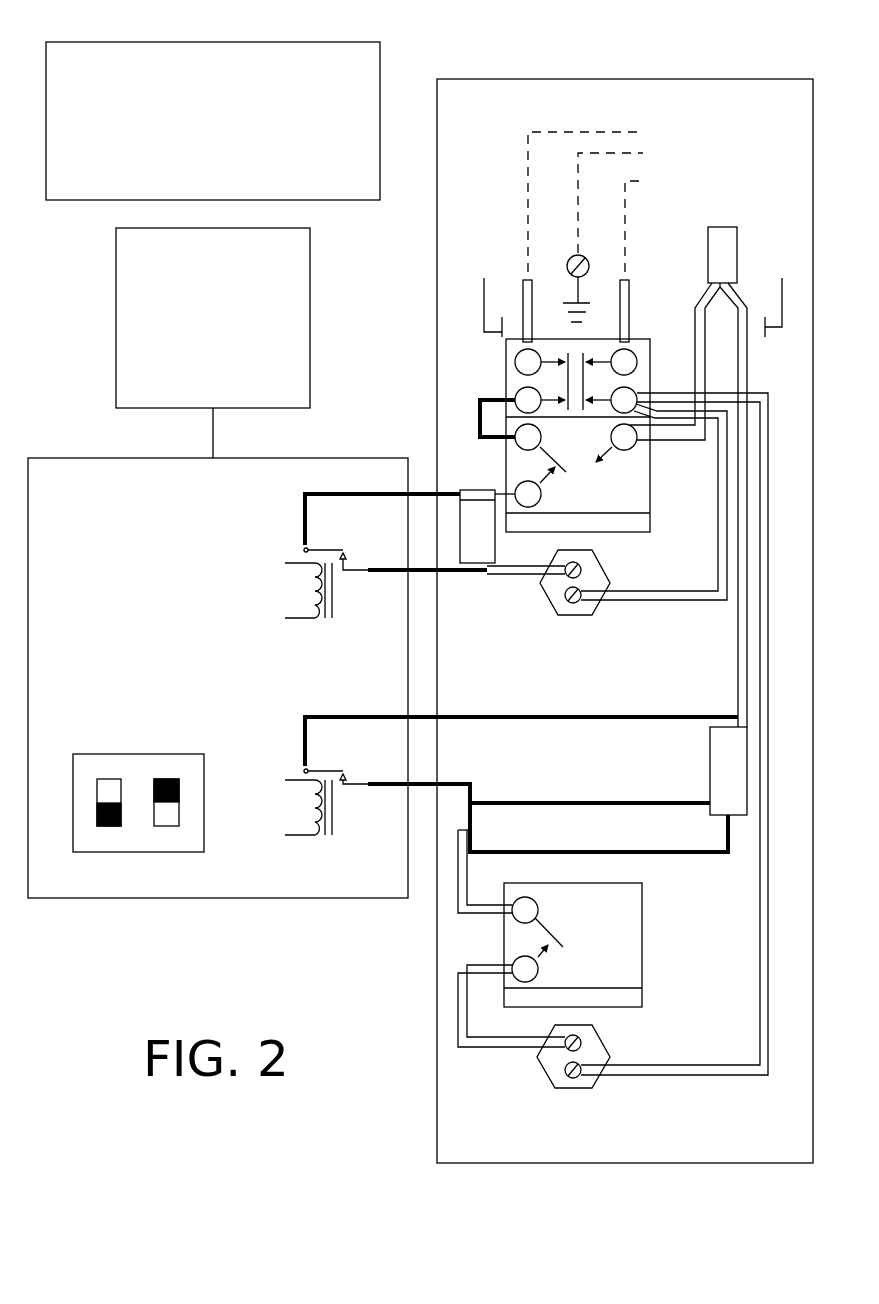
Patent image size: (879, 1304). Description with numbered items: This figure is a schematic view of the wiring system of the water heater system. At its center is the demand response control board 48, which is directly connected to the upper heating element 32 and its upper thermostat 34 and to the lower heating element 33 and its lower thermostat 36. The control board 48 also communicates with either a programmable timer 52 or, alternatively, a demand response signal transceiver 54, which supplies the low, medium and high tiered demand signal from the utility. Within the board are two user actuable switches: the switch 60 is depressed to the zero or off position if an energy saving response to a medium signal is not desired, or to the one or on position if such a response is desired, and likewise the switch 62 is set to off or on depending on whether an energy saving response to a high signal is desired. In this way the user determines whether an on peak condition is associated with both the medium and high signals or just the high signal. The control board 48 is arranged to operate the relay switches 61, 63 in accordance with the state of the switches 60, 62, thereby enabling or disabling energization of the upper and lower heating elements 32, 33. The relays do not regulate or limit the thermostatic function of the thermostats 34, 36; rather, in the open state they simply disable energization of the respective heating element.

The upper heating element 32 is at (553, 597).
The lower heating element 33 is at (553, 1072).
The upper thermostat 34 is at (512, 468).
The lower thermostat 36 is at (620, 937).
The demand response control board 48 is at (95, 458).
The programmable timer 52 is at (266, 42).
The demand response signal transceiver 54 is at (115, 310).
The user actuable switch 60 is at (155, 817).
The relay switch 61 is at (294, 590).
The user actuable switch 62 is at (98, 817).
The relay switch 63 is at (294, 806).